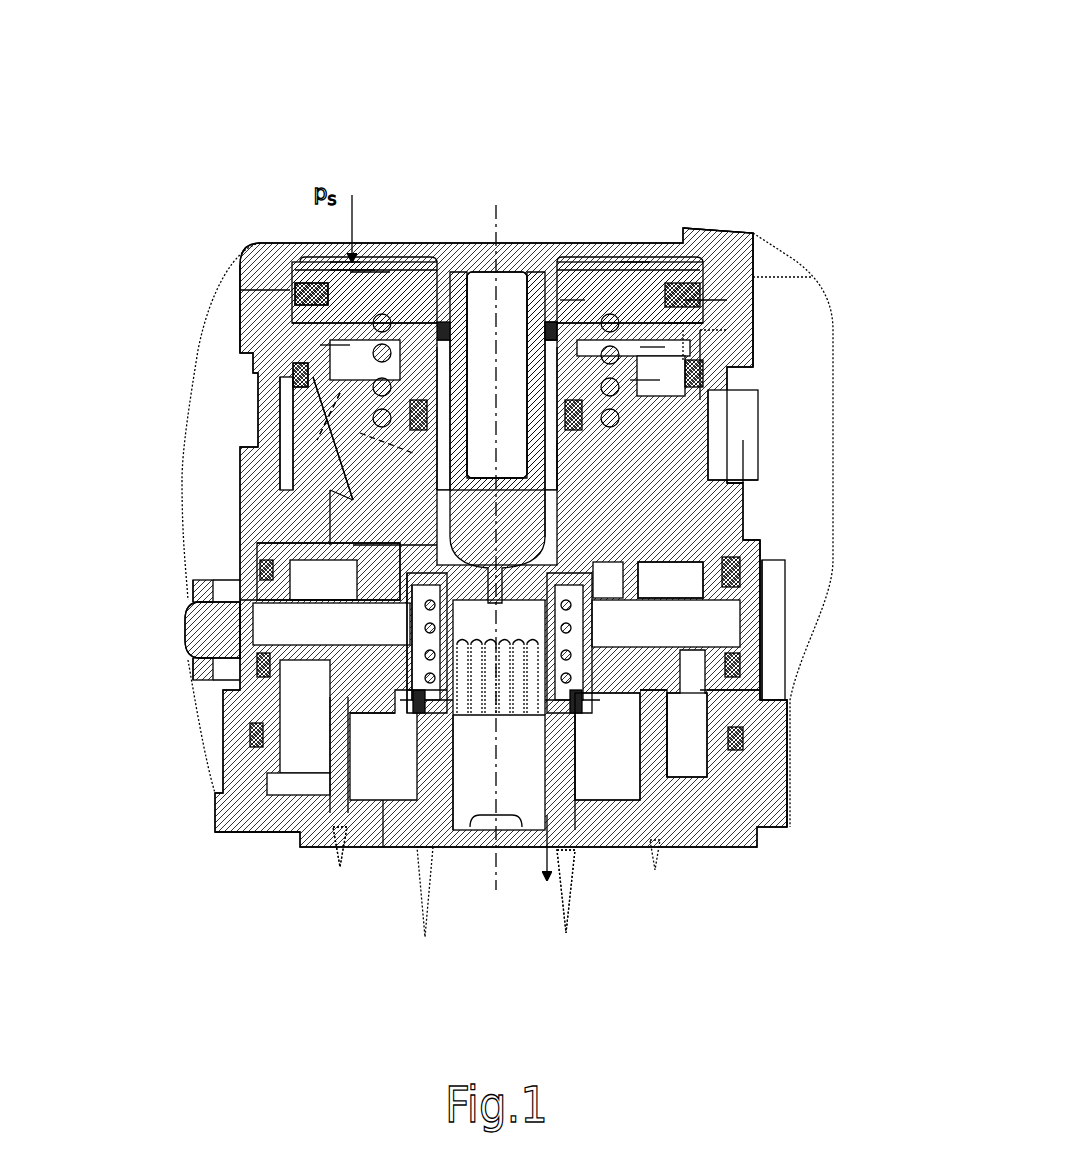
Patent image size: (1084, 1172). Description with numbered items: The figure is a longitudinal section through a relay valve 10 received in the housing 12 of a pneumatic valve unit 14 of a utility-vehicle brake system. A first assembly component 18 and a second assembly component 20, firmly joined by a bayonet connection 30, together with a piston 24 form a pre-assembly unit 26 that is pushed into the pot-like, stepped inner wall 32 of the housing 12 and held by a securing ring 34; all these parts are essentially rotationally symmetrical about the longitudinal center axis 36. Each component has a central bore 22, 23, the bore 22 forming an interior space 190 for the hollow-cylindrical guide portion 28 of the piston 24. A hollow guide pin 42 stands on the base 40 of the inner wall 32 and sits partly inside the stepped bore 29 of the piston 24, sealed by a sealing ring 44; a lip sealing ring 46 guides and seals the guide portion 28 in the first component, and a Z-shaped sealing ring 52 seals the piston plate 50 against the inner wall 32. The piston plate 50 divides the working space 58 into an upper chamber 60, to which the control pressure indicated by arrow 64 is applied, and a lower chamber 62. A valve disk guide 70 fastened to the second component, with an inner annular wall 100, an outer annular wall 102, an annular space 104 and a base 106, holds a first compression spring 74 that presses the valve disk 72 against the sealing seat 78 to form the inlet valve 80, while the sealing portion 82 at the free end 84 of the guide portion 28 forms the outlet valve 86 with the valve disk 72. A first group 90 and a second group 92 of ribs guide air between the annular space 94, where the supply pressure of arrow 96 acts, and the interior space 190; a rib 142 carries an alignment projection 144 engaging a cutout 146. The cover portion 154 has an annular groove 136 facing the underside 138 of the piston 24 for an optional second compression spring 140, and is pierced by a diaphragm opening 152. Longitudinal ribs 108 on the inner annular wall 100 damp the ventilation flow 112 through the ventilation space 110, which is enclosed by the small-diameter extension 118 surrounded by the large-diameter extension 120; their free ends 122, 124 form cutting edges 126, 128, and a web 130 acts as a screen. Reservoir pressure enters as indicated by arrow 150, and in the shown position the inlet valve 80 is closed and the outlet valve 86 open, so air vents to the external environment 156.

The relay valve 10 is at (250, 140).
The housing 12 is at (300, 332).
The pneumatic valve unit 14 is at (722, 226).
The first assembly component 18 is at (742, 567).
The second assembly component 20 is at (682, 760).
The central bore 22 is at (578, 522).
The central bore 23 is at (412, 690).
The piston 24 is at (572, 290).
The pre-assembly unit 26 is at (632, 262).
The guide portion 28 is at (577, 468).
The stepped bore 29 is at (456, 505).
The bayonet connection 30 is at (262, 573).
The inner wall 32 is at (290, 458).
The securing ring 34 is at (767, 810).
The longitudinal center axis 36 is at (496, 205).
The base 40 is at (365, 272).
The guide pin 42 is at (468, 300).
The sealing ring 44 is at (551, 320).
The lip sealing ring 46 is at (755, 412).
The piston plate 50 is at (358, 302).
The Z-shaped sealing ring 52 is at (335, 345).
The working space 58 is at (195, 281).
The upper chamber 60 is at (300, 290).
The lower chamber 62 is at (296, 368).
The arrow 64 is at (345, 262).
The valve disk guide 70 is at (400, 658).
The valve disk 72 is at (316, 603).
The first compression spring 74 is at (437, 613).
The sealing seat 78 is at (338, 540).
The inlet valve 80 is at (388, 546).
The sealing portion 82 is at (720, 560).
The free end 84 is at (328, 480).
The outlet valve 86 is at (724, 598).
The first group of ribs 90 is at (306, 405).
The second group of ribs 92 is at (642, 383).
The annular space 94 is at (705, 447).
The arrow 96 is at (706, 396).
The inner annular wall 100 is at (647, 693).
The outer annular wall 102 is at (412, 668).
The annular space 104 is at (258, 612).
The base 106 is at (597, 712).
The longitudinal ribs 108 is at (455, 830).
The ventilation space 110 is at (476, 630).
The ventilation flow 112 is at (533, 830).
The axial extension of relatively small diameter 118 is at (590, 797).
The axial extension of relatively large diameter 120 is at (383, 830).
The free end 122 is at (609, 940).
The free end 124 is at (253, 857).
The cutting edge 126 is at (574, 918).
The cutting edge 128 is at (335, 848).
The web 130 is at (505, 850).
The annular groove 136 is at (657, 360).
The underside 138 is at (705, 305).
The second compression spring 140 is at (345, 262).
The rib 142 is at (652, 528).
The alignment projection 144 is at (692, 540).
The cutout 146 is at (705, 478).
The arrow 150 is at (282, 628).
The diaphragm opening 152 is at (342, 393).
The cover portion 154 is at (690, 335).
The external environment 156 is at (283, 922).
The interior space 190 is at (752, 440).